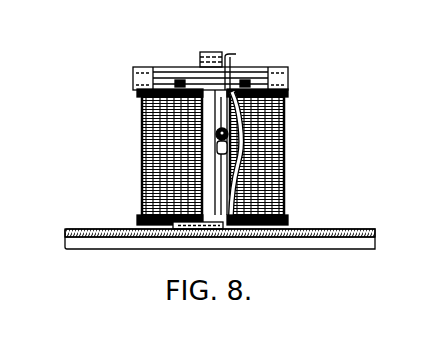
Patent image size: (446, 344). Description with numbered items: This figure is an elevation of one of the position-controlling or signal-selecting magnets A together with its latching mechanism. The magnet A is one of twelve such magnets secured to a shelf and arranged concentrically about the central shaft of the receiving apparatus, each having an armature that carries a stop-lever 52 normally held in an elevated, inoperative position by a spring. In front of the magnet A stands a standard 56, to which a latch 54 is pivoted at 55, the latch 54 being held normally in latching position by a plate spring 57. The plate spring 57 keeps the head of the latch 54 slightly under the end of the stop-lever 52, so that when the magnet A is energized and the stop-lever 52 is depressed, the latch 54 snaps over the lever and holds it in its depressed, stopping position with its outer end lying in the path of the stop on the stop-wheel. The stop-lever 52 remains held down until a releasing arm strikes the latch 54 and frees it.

The stop-lever 52 is at (215, 52).
The latch 54 is at (230, 56).
The pivot 55 is at (142, 152).
The plate spring 57 is at (284, 133).
The position-controlling magnet A is at (284, 188).
The standard 56 is at (224, 228).